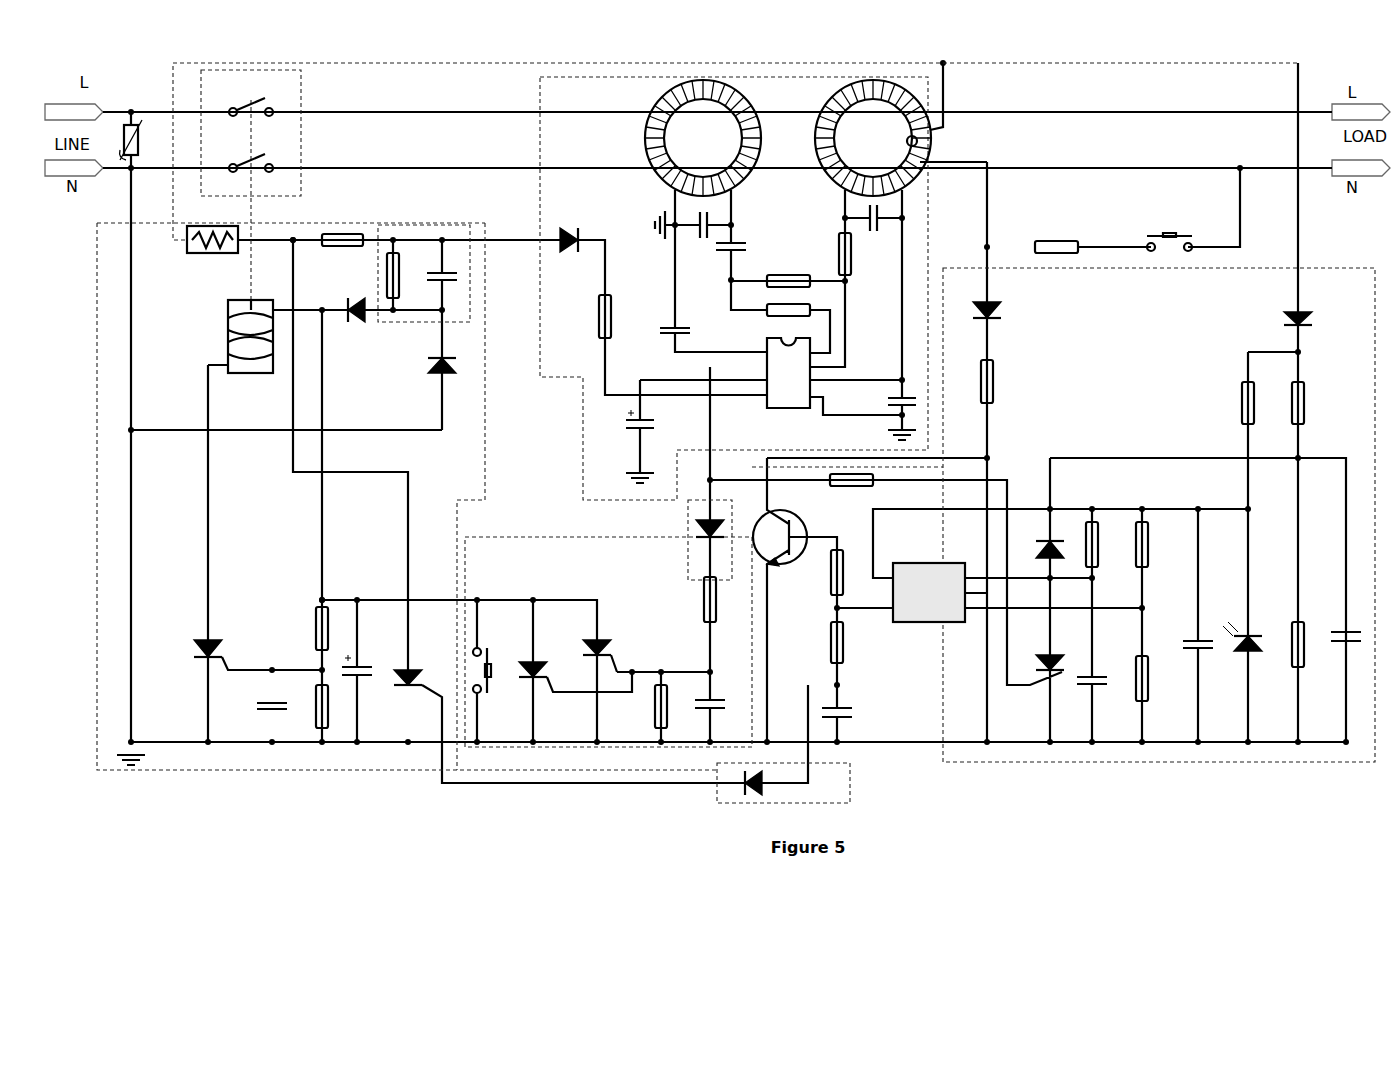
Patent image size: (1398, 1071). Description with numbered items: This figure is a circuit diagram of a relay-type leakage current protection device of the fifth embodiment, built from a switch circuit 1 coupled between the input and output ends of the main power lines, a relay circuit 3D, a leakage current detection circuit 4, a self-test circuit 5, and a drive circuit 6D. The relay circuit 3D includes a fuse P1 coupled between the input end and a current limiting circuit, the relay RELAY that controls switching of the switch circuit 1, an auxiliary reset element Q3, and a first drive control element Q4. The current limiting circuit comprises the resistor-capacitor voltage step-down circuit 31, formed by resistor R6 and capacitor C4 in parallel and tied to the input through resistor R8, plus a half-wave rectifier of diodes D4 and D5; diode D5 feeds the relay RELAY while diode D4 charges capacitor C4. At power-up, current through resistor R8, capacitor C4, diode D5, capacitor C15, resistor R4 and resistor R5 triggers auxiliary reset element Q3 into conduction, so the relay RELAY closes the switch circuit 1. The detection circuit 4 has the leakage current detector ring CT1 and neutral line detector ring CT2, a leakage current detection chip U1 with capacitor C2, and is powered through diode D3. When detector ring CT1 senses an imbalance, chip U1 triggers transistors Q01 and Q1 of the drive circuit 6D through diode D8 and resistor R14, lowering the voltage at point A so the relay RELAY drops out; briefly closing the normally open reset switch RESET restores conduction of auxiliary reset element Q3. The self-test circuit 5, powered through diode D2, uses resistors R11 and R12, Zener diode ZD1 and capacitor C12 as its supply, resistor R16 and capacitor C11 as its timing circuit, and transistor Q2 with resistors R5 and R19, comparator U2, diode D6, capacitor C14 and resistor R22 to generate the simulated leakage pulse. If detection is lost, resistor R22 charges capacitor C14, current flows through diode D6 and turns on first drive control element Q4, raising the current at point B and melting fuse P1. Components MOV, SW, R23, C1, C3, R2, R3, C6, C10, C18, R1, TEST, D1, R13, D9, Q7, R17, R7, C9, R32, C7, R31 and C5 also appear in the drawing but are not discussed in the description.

The switch circuit 1 is at (302, 147).
The leakage current detection circuit 4 is at (573, 378).
The self-test circuit 5 is at (1128, 268).
The resistor-capacitor voltage step-down circuit 31 is at (415, 325).
The relay circuit 3D is at (485, 440).
The drive circuit 6D is at (585, 537).
The point A is at (318, 598).
The point B is at (297, 245).
The metal oxide varistor MOV is at (143, 140).
The switch SW is at (251, 126).
The fuse P1 is at (212, 230).
The resistor R8 is at (343, 229).
The resistor R6 is at (378, 275).
The capacitor C4 is at (432, 277).
The diode D5 is at (367, 324).
The diode D4 is at (427, 368).
The relay RELAY is at (253, 353).
The diode D3 is at (572, 250).
The resistor R23 is at (587, 316).
The neutral line detector ring CT2 is at (703, 138).
The leakage current detector ring CT1 is at (873, 138).
The capacitor C1 is at (699, 236).
The capacitor C3 is at (746, 244).
The resistor R2 is at (788, 272).
The capacitor C2 is at (879, 228).
The resistor R3 is at (857, 256).
The resistor R4 is at (563, 477).
The capacitor C6 is at (687, 339).
The leakage current detection chip U1 is at (788, 373).
The capacitor C10 is at (884, 399).
The capacitor C18 is at (622, 427).
The resistor R1 is at (1056, 236).
The test button TEST is at (1169, 228).
The diode D1 is at (1002, 312).
The resistor R5 is at (670, 544).
The diode D2 is at (1310, 311).
The resistor R11 is at (1259, 403).
The resistor R12 is at (1310, 403).
The resistor R13 is at (851, 491).
The transistor Q2 is at (791, 536).
The diode D8 is at (700, 543).
The resistor R14 is at (692, 599).
The resistor R19 is at (826, 572).
The resistor R22 is at (826, 642).
The capacitor C14 is at (850, 712).
The comparator U2 is at (929, 592).
The diode D6 is at (767, 771).
The diode D9 is at (1039, 550).
The thyristor Q7 is at (1044, 686).
The resistor R16 is at (1103, 544).
The resistor R17 is at (1153, 544).
The capacitor C11 is at (1100, 702).
The resistor R7 is at (1153, 678).
The capacitor C9 is at (1204, 667).
The Zener diode ZD1 is at (1251, 664).
The resistor R32 is at (1310, 645).
The capacitor C12 is at (1354, 650).
The auxiliary reset element Q3 is at (223, 649).
The capacitor C7 is at (262, 711).
The capacitor C15 is at (364, 685).
The first drive control element Q4 is at (416, 666).
The reset switch RESET is at (493, 677).
The transistor Q01 is at (553, 671).
The transistor Q1 is at (609, 652).
The resistor R31 is at (674, 706).
The capacitor C5 is at (723, 711).